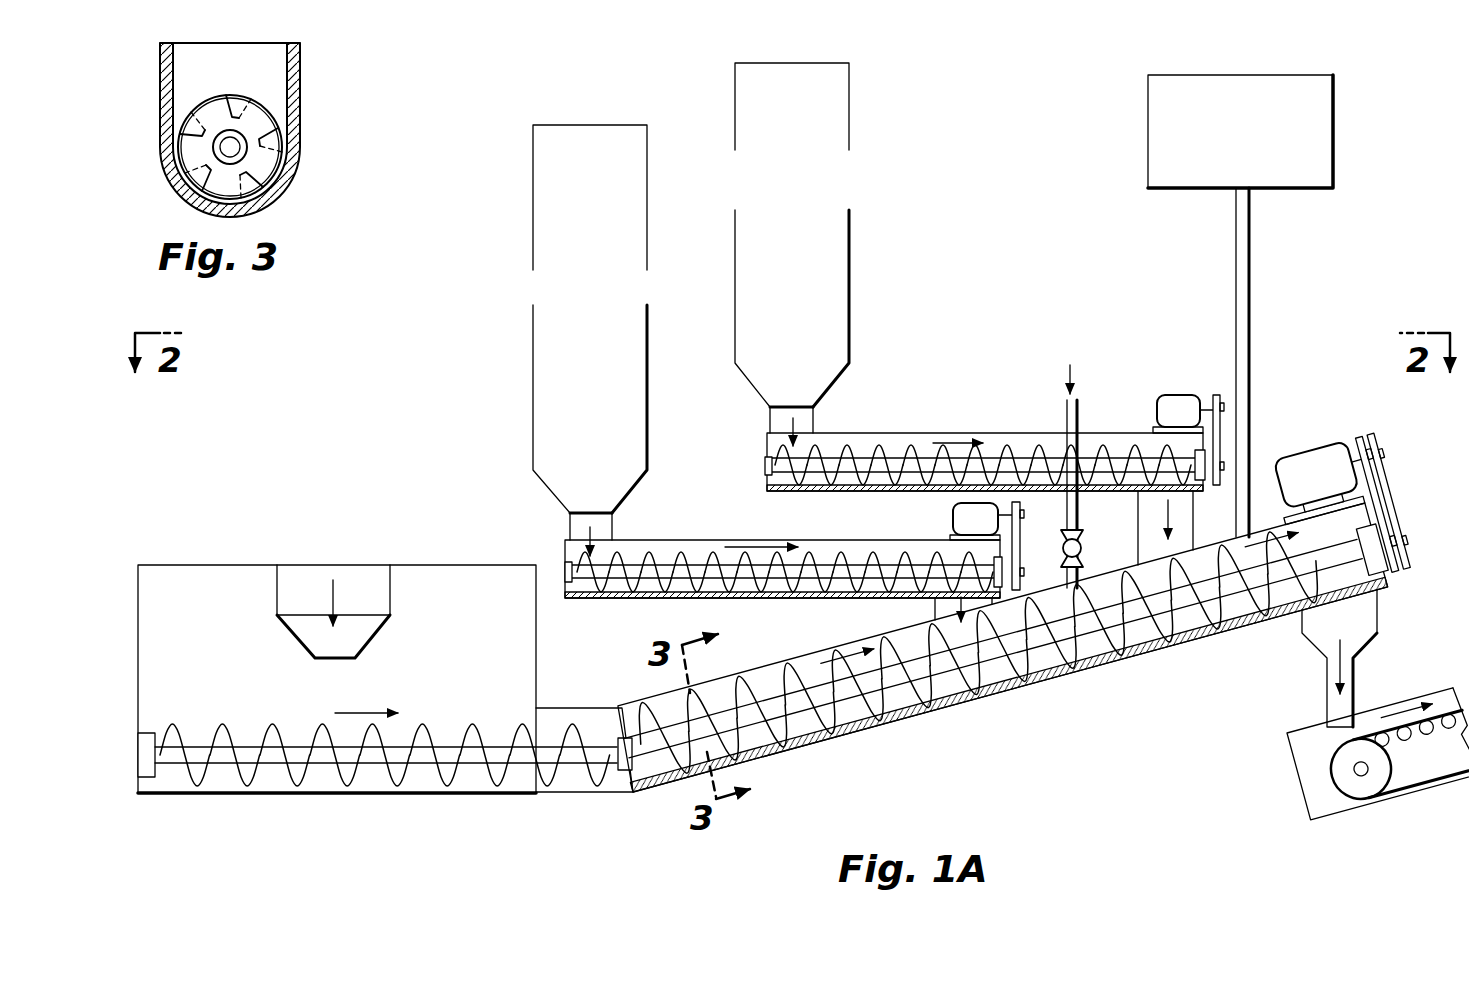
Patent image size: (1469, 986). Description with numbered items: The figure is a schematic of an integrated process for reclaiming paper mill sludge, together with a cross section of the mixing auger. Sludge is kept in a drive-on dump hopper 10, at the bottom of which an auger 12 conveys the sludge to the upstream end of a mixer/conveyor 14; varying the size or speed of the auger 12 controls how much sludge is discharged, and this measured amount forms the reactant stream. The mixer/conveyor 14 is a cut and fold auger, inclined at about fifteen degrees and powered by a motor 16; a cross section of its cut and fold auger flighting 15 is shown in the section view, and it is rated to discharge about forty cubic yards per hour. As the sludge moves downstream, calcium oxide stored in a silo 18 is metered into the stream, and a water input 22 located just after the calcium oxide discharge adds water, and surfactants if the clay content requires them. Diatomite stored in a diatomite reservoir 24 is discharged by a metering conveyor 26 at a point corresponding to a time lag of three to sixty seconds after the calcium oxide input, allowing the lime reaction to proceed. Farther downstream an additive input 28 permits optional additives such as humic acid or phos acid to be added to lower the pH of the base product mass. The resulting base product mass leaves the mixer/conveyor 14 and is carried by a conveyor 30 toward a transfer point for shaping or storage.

In FIG. 1A, the drive-on dump hopper 10 is at (146, 563).
In FIG. 1A, the auger 12 is at (352, 757).
In FIG. 1A, the mixer/conveyor unit 14 is at (1027, 677).
In FIG. 3, the cut and fold auger flighting 15 is at (270, 127).
In FIG. 1A, the motor 16 is at (1323, 455).
In FIG. 1A, the silo 18 is at (540, 237).
In FIG. 1A, the water input 22 is at (1052, 410).
In FIG. 1A, the diatomite reservoir 24 is at (823, 125).
In FIG. 1A, the metering conveyor 26 is at (880, 445).
In FIG. 1A, the additive input 28 is at (1158, 135).
In FIG. 1A, the conveyor 30 is at (1400, 700).